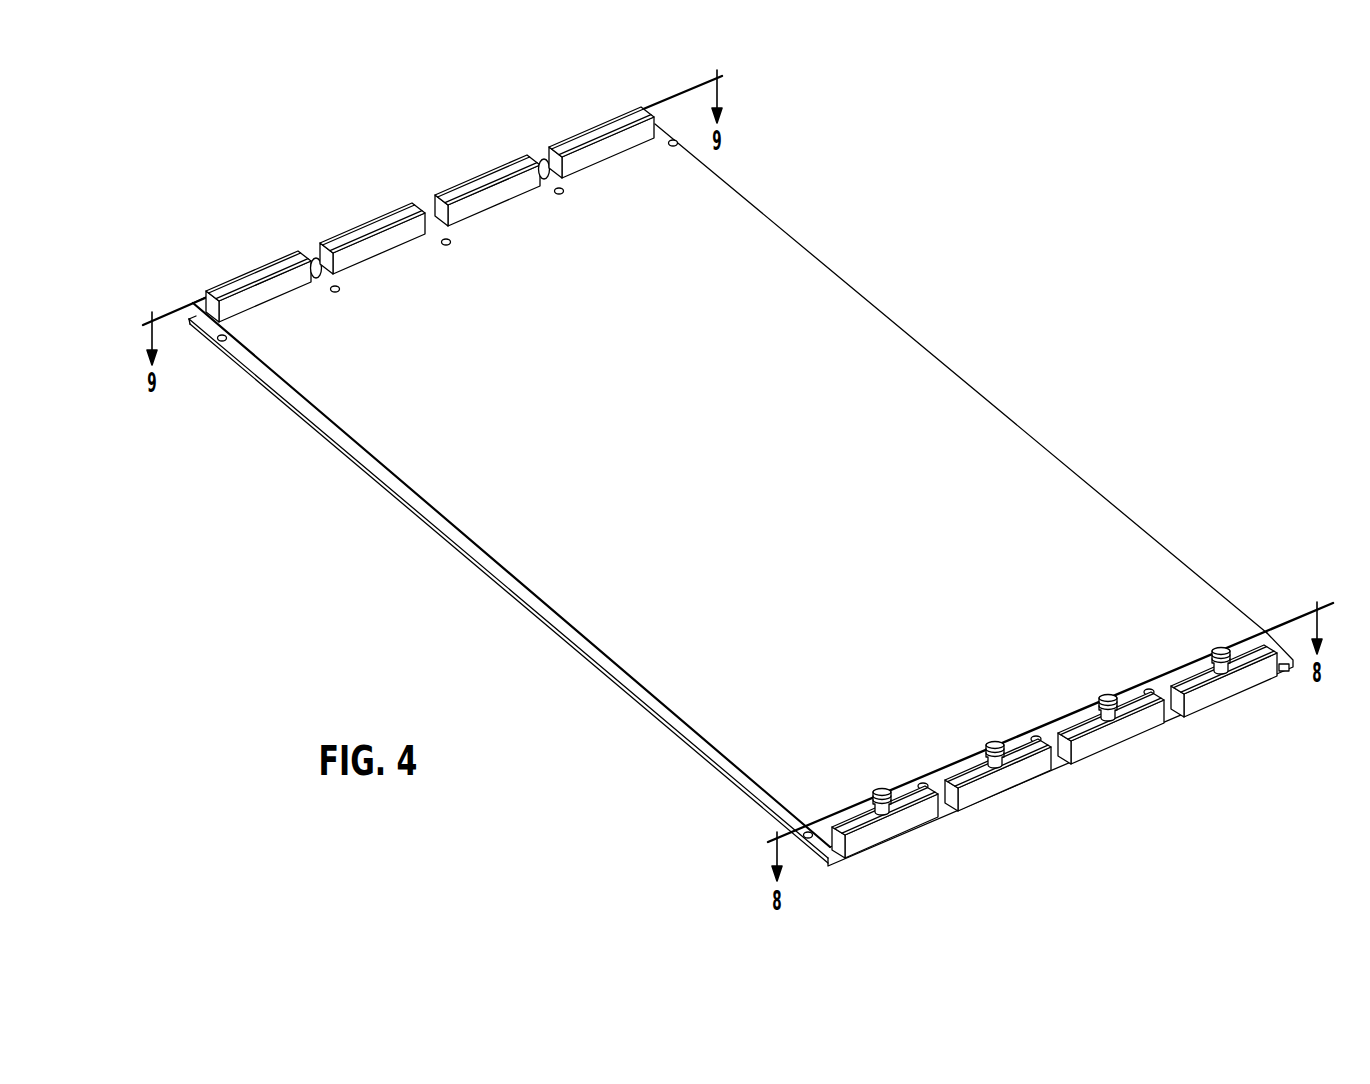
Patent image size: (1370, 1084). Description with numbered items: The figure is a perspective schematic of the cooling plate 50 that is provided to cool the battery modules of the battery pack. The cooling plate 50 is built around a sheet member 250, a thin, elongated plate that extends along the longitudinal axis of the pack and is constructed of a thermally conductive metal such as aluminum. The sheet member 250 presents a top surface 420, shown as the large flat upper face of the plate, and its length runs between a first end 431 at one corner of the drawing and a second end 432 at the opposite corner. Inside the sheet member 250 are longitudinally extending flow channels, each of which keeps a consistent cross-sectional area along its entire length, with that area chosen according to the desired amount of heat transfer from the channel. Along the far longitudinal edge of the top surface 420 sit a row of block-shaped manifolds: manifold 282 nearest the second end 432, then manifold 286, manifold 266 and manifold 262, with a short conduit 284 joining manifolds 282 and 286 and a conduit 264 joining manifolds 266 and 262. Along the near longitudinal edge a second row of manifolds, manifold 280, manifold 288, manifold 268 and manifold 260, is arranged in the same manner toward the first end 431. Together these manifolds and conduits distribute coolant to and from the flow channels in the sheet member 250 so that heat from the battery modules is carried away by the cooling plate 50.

The cooling plate 50 is at (739, 495).
The top surface 420 is at (900, 318).
The sheet member 250 is at (506, 587).
The second end 432 is at (189, 316).
The first end 431 is at (1287, 672).
The manifold 262 is at (590, 128).
The conduit 264 is at (543, 158).
The manifold 266 is at (478, 180).
The manifold 268 is at (1123, 731).
The manifold 260 is at (1235, 682).
The manifold 282 is at (255, 272).
The conduit 284 is at (316, 257).
The manifold 286 is at (368, 226).
The manifold 288 is at (1010, 778).
The manifold 280 is at (896, 827).